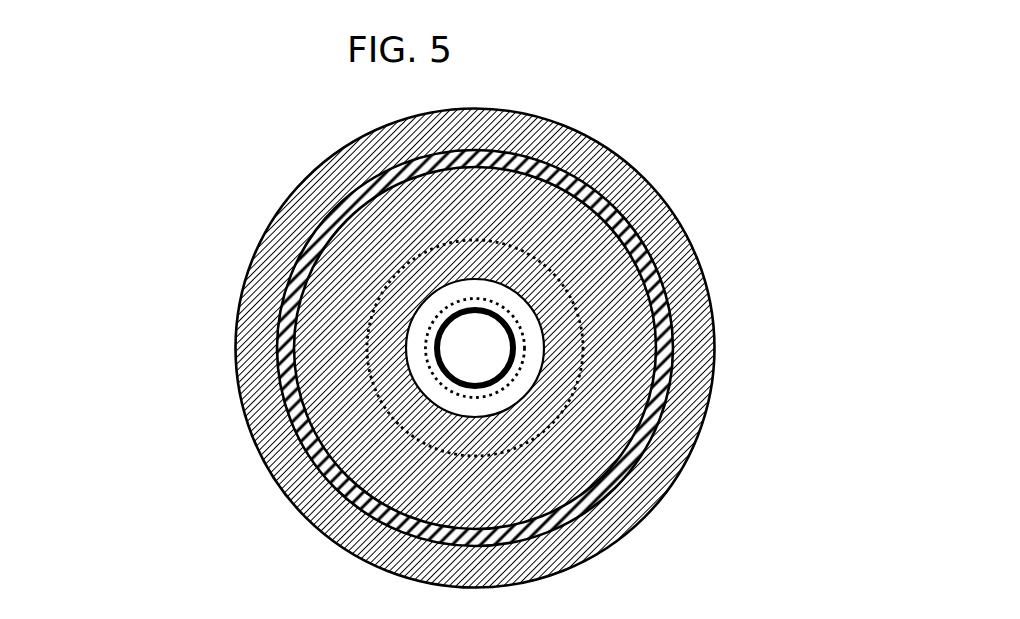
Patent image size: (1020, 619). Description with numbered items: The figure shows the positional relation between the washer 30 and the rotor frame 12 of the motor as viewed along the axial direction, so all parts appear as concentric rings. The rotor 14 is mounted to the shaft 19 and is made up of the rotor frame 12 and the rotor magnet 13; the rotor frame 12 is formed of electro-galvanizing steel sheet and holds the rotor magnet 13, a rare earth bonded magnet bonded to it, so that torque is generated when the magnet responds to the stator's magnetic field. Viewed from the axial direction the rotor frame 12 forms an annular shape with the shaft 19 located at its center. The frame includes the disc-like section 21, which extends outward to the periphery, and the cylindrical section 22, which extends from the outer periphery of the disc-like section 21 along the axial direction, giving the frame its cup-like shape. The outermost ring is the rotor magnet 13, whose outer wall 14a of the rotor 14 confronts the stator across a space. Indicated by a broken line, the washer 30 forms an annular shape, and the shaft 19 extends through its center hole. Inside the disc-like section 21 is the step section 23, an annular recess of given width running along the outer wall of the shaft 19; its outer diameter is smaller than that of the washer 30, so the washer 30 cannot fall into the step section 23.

The rotor frame 12 is at (137, 338).
The rotor magnet 13 is at (447, 348).
The rotor 14 is at (95, 400).
The outer wall 14a is at (685, 470).
The shaft 19 is at (467, 336).
The disc-like section 21 is at (323, 384).
The cylindrical section 22 is at (310, 447).
The step section 23 is at (419, 341).
The washer 30 is at (580, 306).